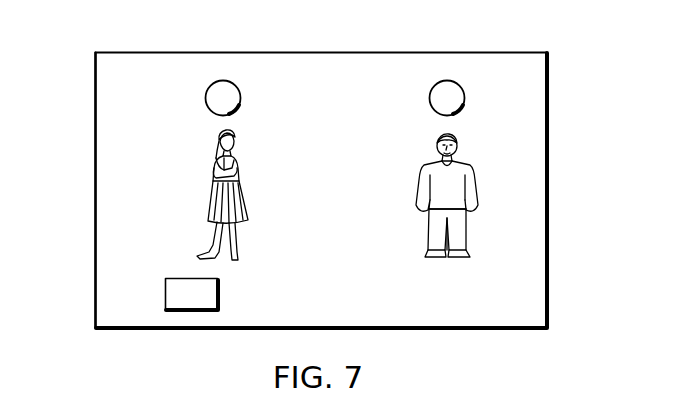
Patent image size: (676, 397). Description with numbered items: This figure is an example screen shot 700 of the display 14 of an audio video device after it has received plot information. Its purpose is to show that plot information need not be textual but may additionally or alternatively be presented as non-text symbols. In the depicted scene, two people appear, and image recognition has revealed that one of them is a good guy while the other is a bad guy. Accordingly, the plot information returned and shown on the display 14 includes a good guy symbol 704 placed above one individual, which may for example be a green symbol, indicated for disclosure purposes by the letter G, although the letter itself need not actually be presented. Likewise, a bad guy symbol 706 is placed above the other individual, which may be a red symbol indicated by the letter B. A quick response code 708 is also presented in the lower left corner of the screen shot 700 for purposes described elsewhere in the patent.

The screen shot 700 is at (95, 95).
The display 14 is at (95, 237).
The good guy symbol 704 is at (205, 100).
The bad guy symbol 706 is at (429, 99).
The quick response (QR) code 708 is at (165, 298).